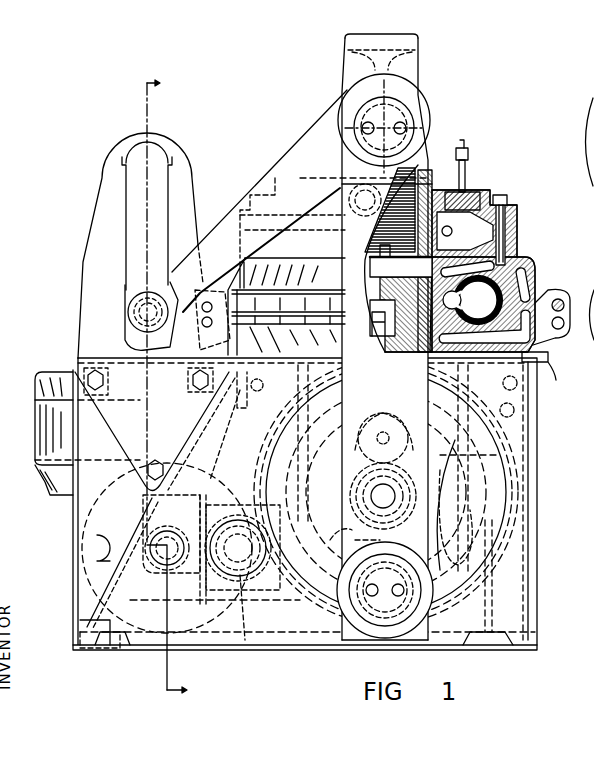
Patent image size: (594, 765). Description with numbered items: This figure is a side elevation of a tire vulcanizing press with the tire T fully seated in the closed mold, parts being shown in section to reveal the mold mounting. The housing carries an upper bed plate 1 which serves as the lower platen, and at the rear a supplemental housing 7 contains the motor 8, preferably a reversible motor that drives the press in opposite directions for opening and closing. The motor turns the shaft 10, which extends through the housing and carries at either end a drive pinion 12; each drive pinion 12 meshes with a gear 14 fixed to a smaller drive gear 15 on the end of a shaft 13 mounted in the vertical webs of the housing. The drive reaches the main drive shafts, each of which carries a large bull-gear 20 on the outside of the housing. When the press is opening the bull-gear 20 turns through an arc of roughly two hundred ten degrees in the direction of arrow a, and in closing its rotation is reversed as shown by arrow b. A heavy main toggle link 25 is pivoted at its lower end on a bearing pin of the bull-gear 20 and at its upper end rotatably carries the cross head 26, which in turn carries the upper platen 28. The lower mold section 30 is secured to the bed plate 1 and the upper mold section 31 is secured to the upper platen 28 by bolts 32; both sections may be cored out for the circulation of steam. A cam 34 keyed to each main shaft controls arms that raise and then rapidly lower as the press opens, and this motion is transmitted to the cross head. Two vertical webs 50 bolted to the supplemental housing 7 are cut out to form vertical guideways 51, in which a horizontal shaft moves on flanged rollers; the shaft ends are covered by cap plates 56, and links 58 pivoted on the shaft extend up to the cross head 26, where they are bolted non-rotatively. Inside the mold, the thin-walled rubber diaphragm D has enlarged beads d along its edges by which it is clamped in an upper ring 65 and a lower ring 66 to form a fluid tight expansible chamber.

The upper bed plate 1 is at (448, 496).
The supplemental housing 7 is at (80, 530).
The motor 8 is at (52, 440).
The shaft 10 is at (160, 600).
The drive pinion 12 is at (118, 665).
The shaft 13 is at (224, 575).
The gear 14 is at (252, 605).
The drive gear 15 is at (238, 610).
The bull-gear 20 is at (520, 490).
The main toggle link 25 is at (345, 272).
The cross head 26 is at (405, 42).
The upper platen 28 is at (514, 224).
The lower mold section 30 is at (545, 335).
The upper mold section 31 is at (532, 285).
The bolts 32 is at (503, 207).
The cam 34 is at (462, 562).
The vertical webs 50 is at (185, 200).
The vertical guideways 51 is at (172, 187).
The cap plates 56 is at (128, 302).
The links 58 is at (285, 152).
The upper ring 65 is at (401, 261).
The lower ring 66 is at (408, 337).
The arrow a is at (489, 485).
The arrow b is at (309, 431).
The enlarged beads d is at (452, 300).
The diaphragm D is at (492, 317).
The tire T is at (535, 264).